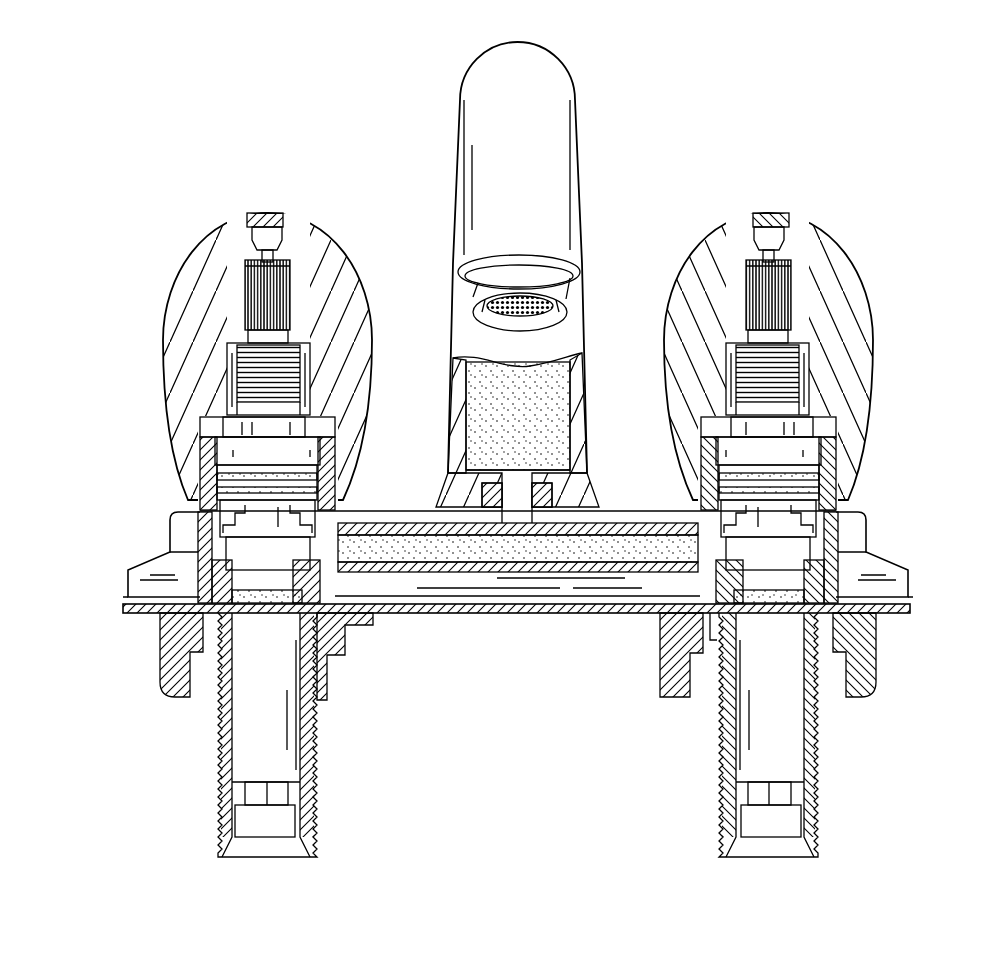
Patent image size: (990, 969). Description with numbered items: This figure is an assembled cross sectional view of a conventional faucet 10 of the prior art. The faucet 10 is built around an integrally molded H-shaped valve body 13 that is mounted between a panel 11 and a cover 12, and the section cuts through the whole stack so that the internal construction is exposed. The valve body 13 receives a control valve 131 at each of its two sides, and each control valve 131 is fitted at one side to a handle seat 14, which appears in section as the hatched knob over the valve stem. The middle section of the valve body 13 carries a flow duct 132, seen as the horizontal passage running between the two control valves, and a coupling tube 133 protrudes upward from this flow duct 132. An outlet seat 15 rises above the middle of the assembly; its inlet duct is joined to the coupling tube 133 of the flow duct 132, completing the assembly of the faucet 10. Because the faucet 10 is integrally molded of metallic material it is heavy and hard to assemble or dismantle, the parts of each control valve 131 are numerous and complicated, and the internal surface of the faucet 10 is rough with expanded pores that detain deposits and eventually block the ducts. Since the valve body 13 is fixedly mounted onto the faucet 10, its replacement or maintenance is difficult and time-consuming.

The faucet 10 is at (156, 291).
The panel 11 is at (883, 555).
The cover 12 is at (882, 612).
The valve body 13 is at (818, 705).
The handle seat 14 is at (853, 252).
The outlet seat 15 is at (583, 100).
The control valve 131 is at (798, 371).
The flow duct 132 is at (447, 550).
The coupling tube 133 is at (560, 490).